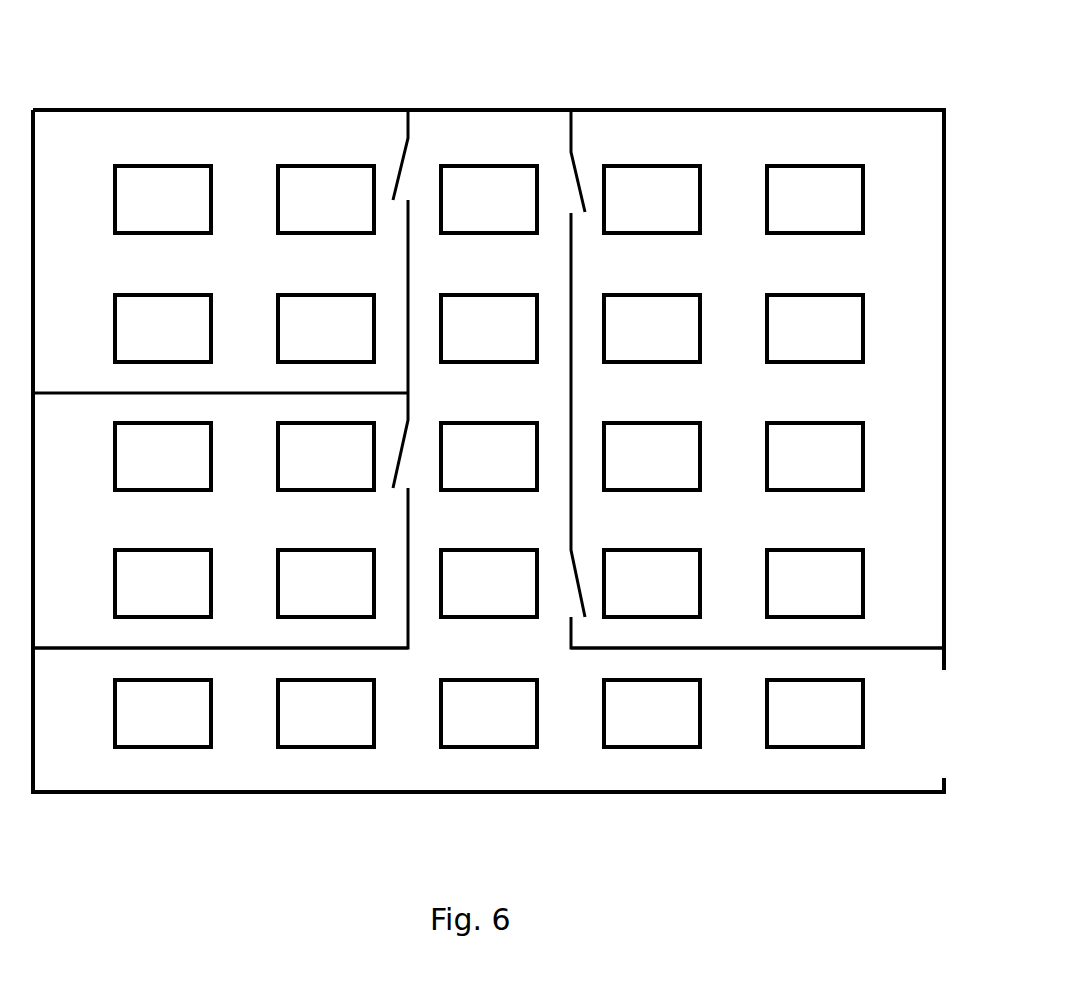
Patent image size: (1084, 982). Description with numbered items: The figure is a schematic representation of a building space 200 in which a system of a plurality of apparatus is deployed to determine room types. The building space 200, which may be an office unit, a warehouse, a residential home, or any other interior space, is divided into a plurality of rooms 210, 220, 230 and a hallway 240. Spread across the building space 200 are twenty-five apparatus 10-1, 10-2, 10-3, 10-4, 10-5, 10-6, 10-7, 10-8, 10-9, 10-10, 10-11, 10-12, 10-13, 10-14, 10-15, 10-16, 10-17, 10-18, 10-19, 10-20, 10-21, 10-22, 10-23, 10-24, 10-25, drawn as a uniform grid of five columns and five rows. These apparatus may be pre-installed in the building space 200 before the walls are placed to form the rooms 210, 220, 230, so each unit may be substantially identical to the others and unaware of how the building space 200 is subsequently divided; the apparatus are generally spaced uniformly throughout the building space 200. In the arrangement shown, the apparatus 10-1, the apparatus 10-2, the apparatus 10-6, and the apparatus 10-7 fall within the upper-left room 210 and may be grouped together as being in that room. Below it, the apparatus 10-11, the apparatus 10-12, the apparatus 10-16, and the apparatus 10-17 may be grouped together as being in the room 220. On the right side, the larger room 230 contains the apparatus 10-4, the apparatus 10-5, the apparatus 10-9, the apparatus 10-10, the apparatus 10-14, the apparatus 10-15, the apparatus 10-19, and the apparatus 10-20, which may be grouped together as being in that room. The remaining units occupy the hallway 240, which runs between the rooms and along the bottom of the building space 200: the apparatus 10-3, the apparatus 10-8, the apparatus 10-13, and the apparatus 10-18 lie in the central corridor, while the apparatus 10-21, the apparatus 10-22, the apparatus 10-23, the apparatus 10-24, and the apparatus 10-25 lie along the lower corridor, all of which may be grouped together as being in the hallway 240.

The building space 200 is at (708, 110).
The room 210 is at (267, 276).
The room 220 is at (267, 532).
The room 230 is at (756, 404).
The hallway 240 is at (592, 769).
The apparatus 10-1 is at (137, 212).
The apparatus 10-2 is at (300, 212).
The apparatus 10-3 is at (463, 212).
The apparatus 10-4 is at (626, 212).
The apparatus 10-5 is at (789, 212).
The apparatus 10-6 is at (137, 341).
The apparatus 10-7 is at (300, 341).
The apparatus 10-8 is at (463, 341).
The apparatus 10-9 is at (626, 341).
The apparatus 10-10 is at (780, 341).
The apparatus 10-11 is at (128, 469).
The apparatus 10-12 is at (291, 469).
The apparatus 10-13 is at (454, 469).
The apparatus 10-14 is at (617, 469).
The apparatus 10-15 is at (780, 469).
The apparatus 10-16 is at (128, 596).
The apparatus 10-17 is at (291, 596).
The apparatus 10-18 is at (454, 596).
The apparatus 10-19 is at (617, 596).
The apparatus 10-20 is at (780, 596).
The apparatus 10-21 is at (128, 726).
The apparatus 10-22 is at (291, 726).
The apparatus 10-23 is at (454, 726).
The apparatus 10-24 is at (617, 726).
The apparatus 10-25 is at (780, 726).